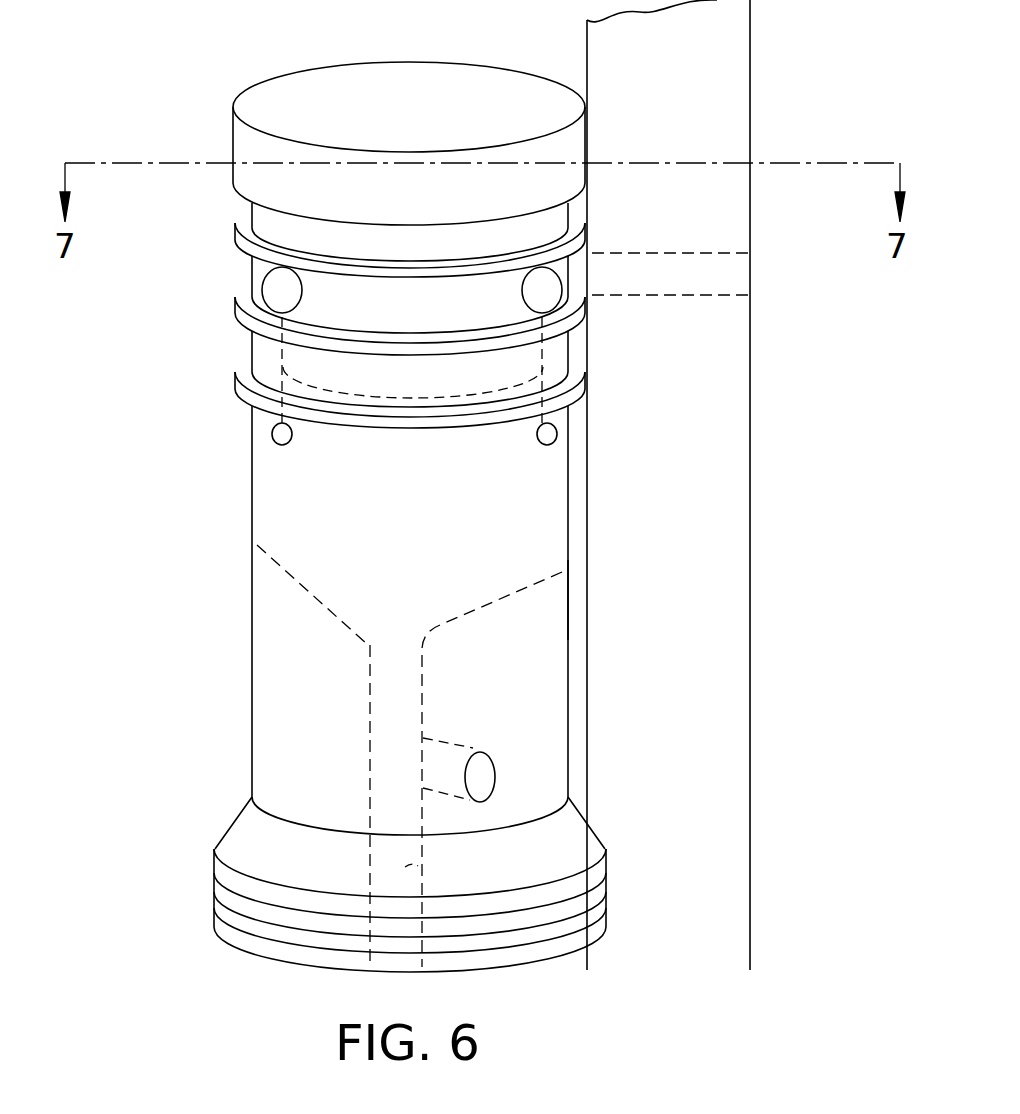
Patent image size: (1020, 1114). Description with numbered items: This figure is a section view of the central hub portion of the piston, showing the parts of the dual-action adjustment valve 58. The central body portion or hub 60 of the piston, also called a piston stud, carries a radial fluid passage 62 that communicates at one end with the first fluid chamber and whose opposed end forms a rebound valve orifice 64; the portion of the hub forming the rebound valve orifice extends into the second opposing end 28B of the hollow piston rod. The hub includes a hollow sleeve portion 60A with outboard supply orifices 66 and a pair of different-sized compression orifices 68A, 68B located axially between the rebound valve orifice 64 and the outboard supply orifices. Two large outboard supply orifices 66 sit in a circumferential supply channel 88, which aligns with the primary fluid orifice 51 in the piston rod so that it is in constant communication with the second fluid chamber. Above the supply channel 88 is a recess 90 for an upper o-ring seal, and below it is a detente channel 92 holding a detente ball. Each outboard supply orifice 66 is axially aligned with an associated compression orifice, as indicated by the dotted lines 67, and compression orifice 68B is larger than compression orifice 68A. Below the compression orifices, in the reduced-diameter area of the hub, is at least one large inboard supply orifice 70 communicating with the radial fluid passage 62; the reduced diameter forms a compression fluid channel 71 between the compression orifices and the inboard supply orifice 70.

The second opposing end of the piston rod 28B is at (733, 143).
The primary fluid orifice 51 is at (730, 277).
The dual-action adjustment valve 58 is at (148, 525).
The central body portion (hub) 60 is at (220, 838).
The hollow sleeve portion 60A is at (233, 140).
The radial fluid passage 62 is at (432, 866).
The rebound valve orifice 64 is at (375, 642).
The outboard supply orifice 66 is at (264, 288).
The dotted lines 67 is at (412, 370).
The compression orifice 68A is at (557, 434).
The compression orifice 68B is at (272, 436).
The inboard supply orifice 70 is at (485, 752).
The compression fluid channel 71 is at (572, 600).
The supply channel 88 is at (238, 258).
The recess 90 is at (250, 212).
The detente channel 92 is at (236, 352).